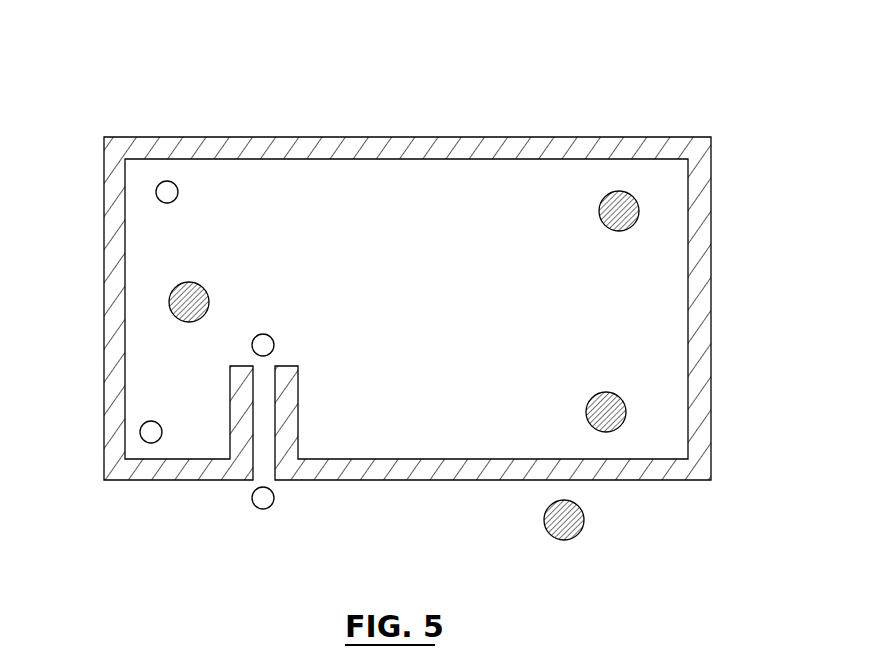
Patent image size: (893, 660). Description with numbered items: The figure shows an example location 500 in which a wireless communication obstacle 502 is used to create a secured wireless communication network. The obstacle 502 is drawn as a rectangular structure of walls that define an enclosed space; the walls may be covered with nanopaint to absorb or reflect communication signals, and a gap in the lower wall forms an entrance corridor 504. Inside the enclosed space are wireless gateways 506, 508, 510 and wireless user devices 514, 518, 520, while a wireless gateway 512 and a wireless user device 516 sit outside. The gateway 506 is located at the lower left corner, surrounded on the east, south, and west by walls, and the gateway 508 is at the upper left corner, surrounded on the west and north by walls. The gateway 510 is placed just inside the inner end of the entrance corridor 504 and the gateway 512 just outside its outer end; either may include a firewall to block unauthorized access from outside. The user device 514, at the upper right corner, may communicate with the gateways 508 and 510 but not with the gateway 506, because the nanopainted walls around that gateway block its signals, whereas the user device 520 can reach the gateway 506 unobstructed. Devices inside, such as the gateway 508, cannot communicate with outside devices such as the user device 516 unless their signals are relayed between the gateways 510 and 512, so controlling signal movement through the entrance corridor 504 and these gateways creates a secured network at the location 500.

The location 500 is at (128, 110).
The wireless communication obstacle 502 is at (413, 137).
The entrance corridor 504 is at (265, 447).
The wireless gateway 506 is at (140, 432).
The wireless gateway 508 is at (156, 192).
The wireless gateway 510 is at (272, 337).
The wireless gateway 512 is at (254, 505).
The wireless user device 514 is at (639, 218).
The wireless user device 516 is at (585, 522).
The wireless user device 518 is at (626, 405).
The wireless user device 520 is at (217, 292).